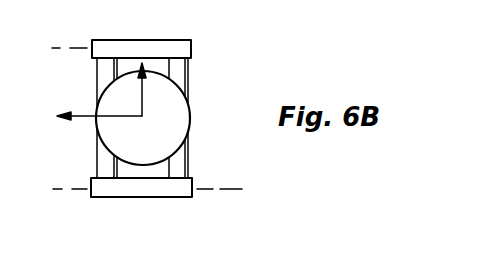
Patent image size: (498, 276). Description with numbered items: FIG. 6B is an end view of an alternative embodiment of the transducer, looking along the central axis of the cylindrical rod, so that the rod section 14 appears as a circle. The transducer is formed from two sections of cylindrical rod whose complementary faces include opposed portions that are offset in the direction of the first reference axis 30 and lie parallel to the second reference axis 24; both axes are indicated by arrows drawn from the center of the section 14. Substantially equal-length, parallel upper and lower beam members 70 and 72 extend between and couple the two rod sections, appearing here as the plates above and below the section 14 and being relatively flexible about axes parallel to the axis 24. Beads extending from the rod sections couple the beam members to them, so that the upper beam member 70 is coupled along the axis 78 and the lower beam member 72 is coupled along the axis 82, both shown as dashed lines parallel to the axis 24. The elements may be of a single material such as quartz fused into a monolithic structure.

The section of cylindrical rod 14 is at (120, 133).
The second reference axis 24 is at (84, 113).
The first reference axis 30 is at (143, 85).
The upper beam member 70 is at (152, 47).
The lower beam member 72 is at (152, 190).
The coupling axis of upper beam member 78 is at (192, 50).
The coupling axis of lower beam member 82 is at (232, 189).